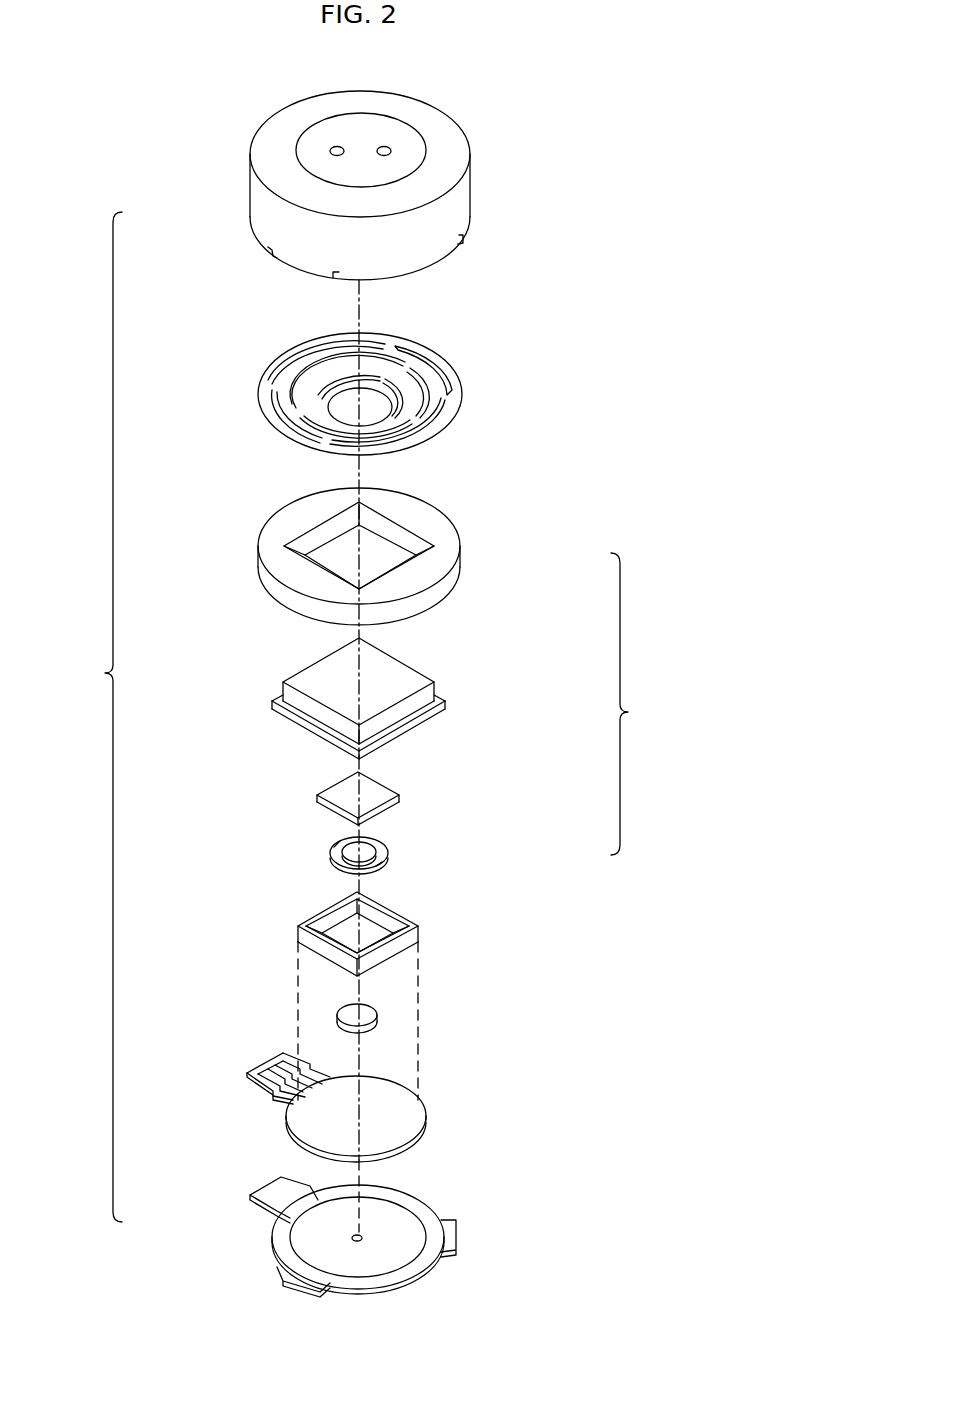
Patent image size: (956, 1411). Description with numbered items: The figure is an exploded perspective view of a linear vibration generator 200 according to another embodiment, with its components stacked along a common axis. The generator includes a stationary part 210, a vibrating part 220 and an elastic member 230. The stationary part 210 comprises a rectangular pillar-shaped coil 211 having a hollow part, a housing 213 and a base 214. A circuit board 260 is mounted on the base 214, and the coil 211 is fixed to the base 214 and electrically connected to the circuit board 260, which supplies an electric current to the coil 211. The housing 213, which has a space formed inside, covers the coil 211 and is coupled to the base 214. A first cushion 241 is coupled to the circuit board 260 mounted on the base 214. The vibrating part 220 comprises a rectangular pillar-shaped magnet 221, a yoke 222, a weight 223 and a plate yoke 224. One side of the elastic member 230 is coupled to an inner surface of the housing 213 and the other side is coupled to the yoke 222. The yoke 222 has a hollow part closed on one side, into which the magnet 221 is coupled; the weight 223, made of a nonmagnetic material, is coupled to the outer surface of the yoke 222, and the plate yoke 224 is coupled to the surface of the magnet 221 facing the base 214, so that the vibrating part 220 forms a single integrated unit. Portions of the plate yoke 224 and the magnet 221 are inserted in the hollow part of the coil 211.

The linear vibration generator 200 is at (91, 74).
The stationary part 210 is at (92, 717).
The housing 213 is at (250, 207).
The elastic member 230 is at (457, 378).
The vibrating part 220 is at (641, 704).
The weight 223 is at (460, 555).
The yoke 222 is at (437, 687).
The rectangular pillar-shaped magnet 221 is at (400, 797).
The plate yoke 224 is at (388, 852).
The rectangular pillar-shaped coil 211 is at (300, 930).
The first cushion 241 is at (380, 1015).
The circuit board 260 is at (428, 1114).
The base 214 is at (272, 1228).